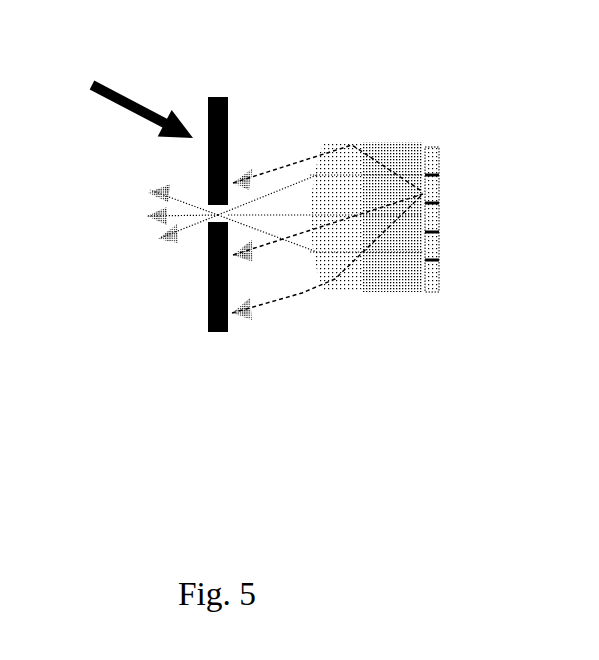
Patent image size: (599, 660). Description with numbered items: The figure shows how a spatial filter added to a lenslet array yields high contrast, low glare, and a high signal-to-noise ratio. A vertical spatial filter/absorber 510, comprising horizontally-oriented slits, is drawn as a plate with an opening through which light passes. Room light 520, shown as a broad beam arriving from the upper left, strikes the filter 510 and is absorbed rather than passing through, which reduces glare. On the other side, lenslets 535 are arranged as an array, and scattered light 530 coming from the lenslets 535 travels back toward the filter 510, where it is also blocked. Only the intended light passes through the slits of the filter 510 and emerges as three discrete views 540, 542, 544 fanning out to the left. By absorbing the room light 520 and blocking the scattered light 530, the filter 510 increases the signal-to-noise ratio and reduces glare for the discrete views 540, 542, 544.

The vertical spatial filter/absorber 510 is at (228, 123).
The room light 520 is at (142, 105).
The scattered light 530 is at (305, 162).
The lenslets 535 is at (467, 136).
The discrete view 540 is at (162, 188).
The discrete view 542 is at (158, 208).
The discrete view 544 is at (162, 235).